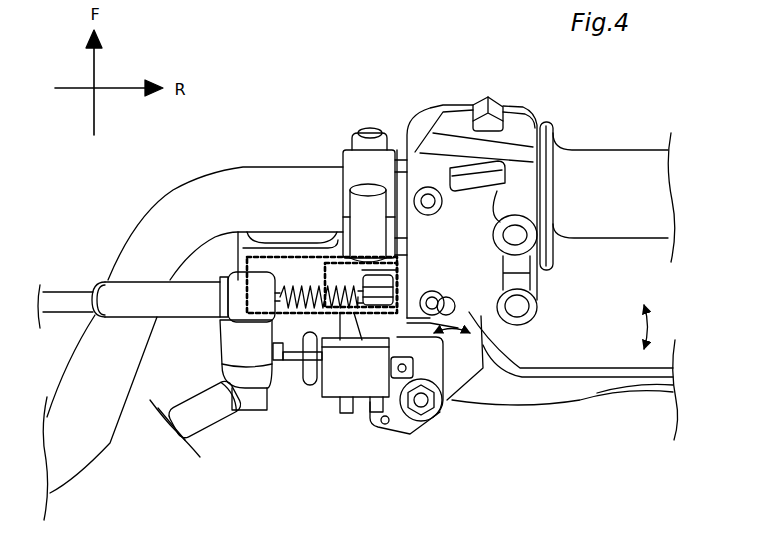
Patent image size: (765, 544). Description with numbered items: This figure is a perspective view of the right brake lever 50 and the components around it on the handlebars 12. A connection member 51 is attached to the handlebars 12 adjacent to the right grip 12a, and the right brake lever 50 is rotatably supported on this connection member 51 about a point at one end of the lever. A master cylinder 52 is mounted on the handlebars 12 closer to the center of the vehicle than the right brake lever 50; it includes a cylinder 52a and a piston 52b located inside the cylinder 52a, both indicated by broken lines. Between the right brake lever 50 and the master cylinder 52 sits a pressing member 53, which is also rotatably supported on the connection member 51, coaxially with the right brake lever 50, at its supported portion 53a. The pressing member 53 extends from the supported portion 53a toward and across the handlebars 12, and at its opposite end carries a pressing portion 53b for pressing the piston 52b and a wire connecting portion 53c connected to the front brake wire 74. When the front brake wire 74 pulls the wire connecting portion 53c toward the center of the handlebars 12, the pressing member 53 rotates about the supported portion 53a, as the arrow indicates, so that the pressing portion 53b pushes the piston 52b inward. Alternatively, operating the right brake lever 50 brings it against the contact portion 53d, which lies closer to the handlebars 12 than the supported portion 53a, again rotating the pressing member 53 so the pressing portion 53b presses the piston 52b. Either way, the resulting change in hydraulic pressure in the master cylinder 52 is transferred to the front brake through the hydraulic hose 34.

The handlebars 12 is at (128, 221).
The right grip 12a is at (607, 163).
The hydraulic hose 34 is at (187, 423).
The right brake lever 50 is at (635, 392).
The connection member 51 is at (370, 157).
The master cylinder 52 is at (261, 254).
The cylinder 52a is at (291, 257).
The piston 52b is at (343, 338).
The pressing member 53 is at (411, 432).
The supported portion 53a is at (445, 410).
The pressing portion 53b is at (447, 285).
The wire connecting portion 53c is at (478, 328).
The contact portion 53d is at (483, 355).
The front brake wire 74 is at (61, 300).